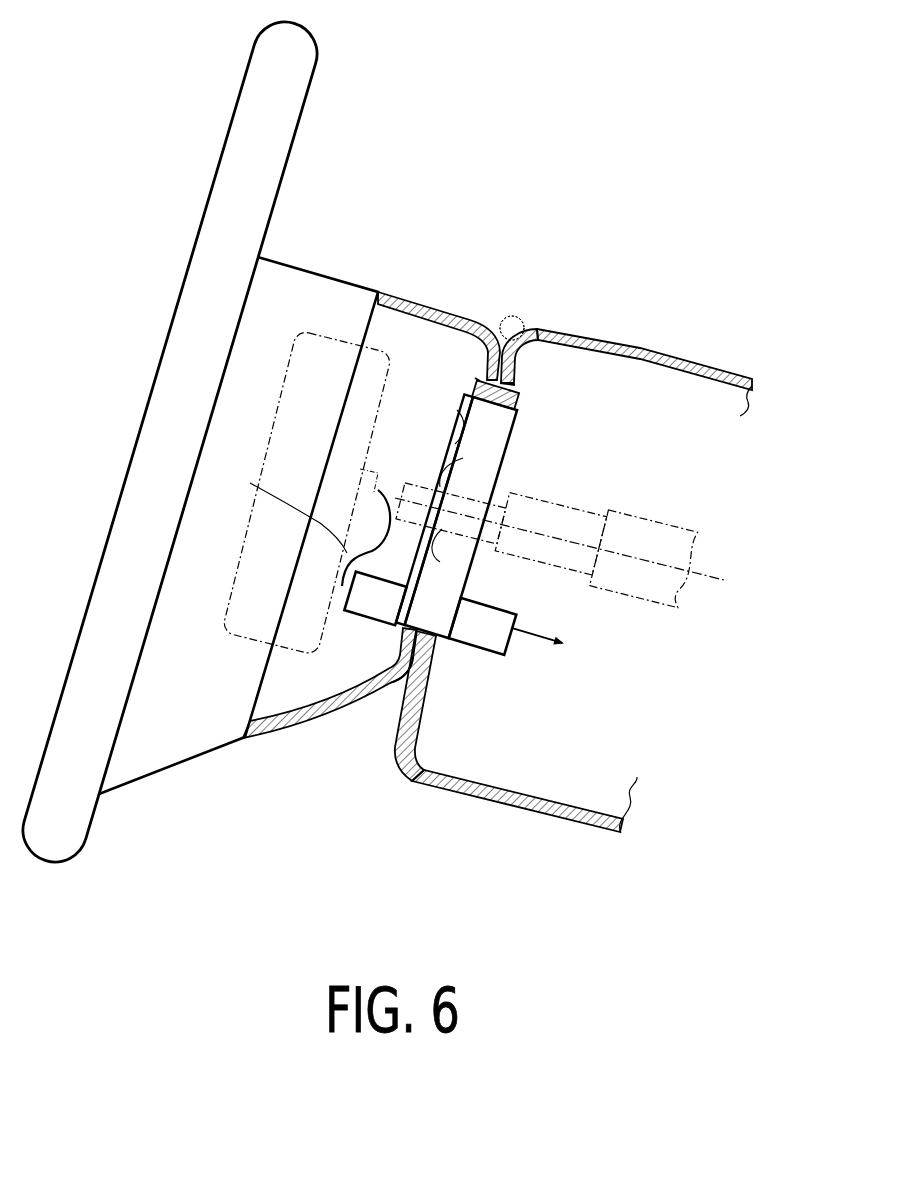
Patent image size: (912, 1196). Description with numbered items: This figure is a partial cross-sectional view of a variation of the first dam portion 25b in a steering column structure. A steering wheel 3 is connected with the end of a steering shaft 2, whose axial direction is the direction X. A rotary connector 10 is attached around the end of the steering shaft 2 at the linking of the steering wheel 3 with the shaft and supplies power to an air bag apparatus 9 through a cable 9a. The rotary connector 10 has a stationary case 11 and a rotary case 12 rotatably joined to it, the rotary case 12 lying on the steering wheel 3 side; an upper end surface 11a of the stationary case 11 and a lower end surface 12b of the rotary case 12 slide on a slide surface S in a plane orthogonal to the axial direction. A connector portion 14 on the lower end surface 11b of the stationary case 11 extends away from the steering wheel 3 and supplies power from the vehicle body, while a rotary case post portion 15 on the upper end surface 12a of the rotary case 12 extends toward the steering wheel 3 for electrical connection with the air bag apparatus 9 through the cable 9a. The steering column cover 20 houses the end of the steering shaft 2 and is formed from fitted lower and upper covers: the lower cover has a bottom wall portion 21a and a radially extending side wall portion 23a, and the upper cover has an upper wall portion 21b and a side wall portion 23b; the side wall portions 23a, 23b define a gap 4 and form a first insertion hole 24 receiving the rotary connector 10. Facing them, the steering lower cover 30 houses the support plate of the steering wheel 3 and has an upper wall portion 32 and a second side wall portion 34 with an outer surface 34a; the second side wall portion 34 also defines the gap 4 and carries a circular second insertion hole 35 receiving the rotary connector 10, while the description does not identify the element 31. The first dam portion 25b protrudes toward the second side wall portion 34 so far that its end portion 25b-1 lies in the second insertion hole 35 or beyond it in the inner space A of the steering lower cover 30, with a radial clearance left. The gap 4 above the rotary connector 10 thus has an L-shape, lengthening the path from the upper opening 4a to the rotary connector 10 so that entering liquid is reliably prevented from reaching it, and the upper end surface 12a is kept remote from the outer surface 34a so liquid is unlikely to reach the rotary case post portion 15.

The steering shaft 2 is at (638, 517).
The steering wheel 3 is at (190, 234).
The gap 4 is at (527, 320).
The upper opening 4a is at (512, 318).
The air bag apparatus 9 is at (286, 372).
The cable 9a is at (277, 508).
The rotary connector 10 is at (472, 539).
The stationary case 11 is at (498, 433).
The upper end surface of the stationary case 11a is at (498, 461).
The lower end surface of the stationary case 11b is at (490, 487).
The rotary case 12 is at (458, 411).
The upper end surface of the rotary case 12a is at (467, 443).
The lower end surface of the rotary case 12b is at (460, 467).
The connector portion 14 is at (472, 632).
The rotary case post portion 15 is at (383, 608).
The steering column cover 20 is at (402, 575).
The bottom wall portion 21a is at (440, 790).
The upper wall portion 21b is at (598, 340).
The side wall portion 23a is at (420, 739).
The side wall portion 23b is at (506, 370).
The first insertion hole 24 is at (500, 398).
The first dam portion 25b is at (505, 386).
The end portion 25b-1 is at (475, 380).
The steering lower cover 30 is at (410, 286).
The housing panel 31 is at (287, 727).
The upper wall portion 32 is at (442, 304).
The second side wall portion 34 is at (483, 338).
The outer surface 34a is at (395, 684).
The second insertion hole 35 is at (482, 372).
The inner space A is at (372, 306).
The slide surface S is at (440, 558).
The axial direction X is at (700, 578).